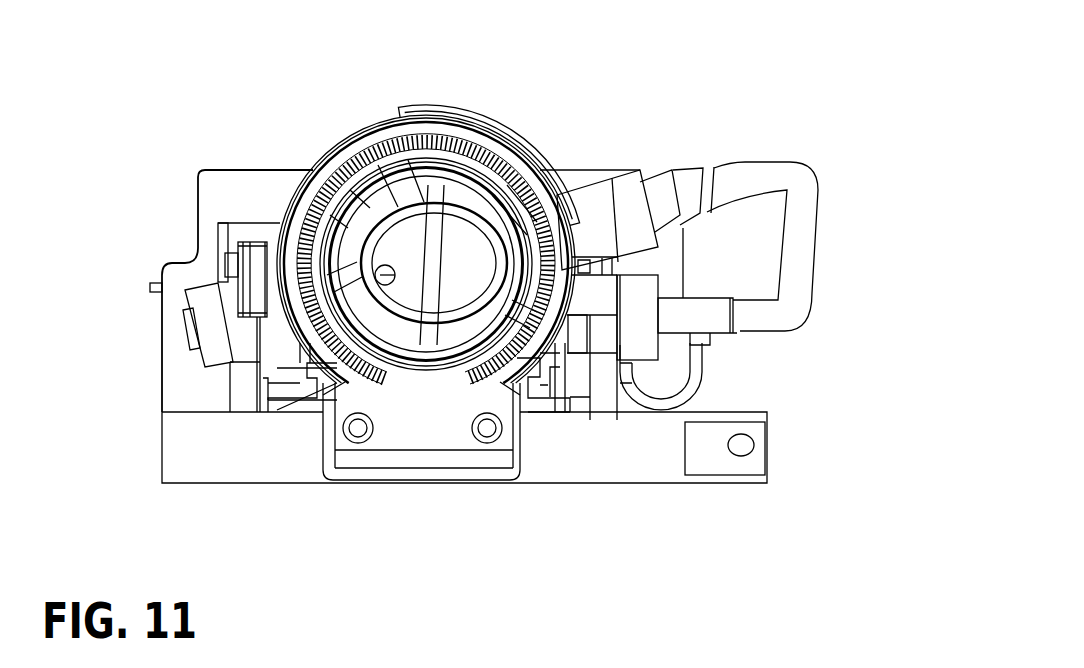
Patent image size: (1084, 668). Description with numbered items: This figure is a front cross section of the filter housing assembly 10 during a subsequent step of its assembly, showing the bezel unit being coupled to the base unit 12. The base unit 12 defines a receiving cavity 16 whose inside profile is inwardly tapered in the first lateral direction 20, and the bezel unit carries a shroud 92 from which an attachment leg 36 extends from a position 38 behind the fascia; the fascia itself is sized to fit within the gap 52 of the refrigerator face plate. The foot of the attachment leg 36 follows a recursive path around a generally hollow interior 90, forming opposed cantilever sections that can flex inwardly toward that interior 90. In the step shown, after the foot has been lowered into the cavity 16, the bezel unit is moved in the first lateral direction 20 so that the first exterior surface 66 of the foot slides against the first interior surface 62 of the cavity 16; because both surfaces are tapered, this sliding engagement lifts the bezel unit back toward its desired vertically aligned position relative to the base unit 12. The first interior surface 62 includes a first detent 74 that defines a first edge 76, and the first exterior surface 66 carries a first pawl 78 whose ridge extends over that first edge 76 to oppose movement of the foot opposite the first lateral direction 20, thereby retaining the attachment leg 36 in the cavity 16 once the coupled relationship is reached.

The filter housing assembly 10 is at (504, 78).
The base unit 12 is at (205, 448).
The first receiving cavity 16 is at (290, 345).
The first lateral direction 20 is at (814, 353).
The attachment leg 36 is at (293, 342).
The position 38 is at (292, 285).
The gap 52 is at (340, 142).
The first interior surface 62 is at (285, 372).
The first exterior surface 66 is at (305, 403).
The first detent 74 is at (285, 403).
The first edge 76 is at (276, 400).
The first pawl 78 is at (296, 405).
The hollow interior 90 is at (322, 387).
The shroud 92 is at (545, 158).